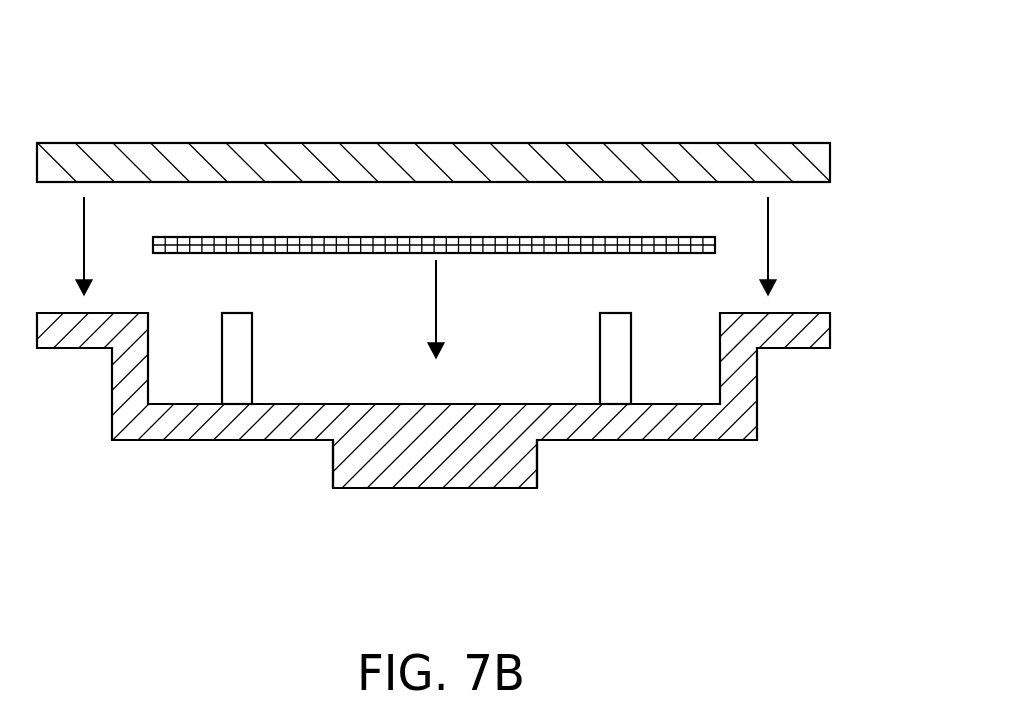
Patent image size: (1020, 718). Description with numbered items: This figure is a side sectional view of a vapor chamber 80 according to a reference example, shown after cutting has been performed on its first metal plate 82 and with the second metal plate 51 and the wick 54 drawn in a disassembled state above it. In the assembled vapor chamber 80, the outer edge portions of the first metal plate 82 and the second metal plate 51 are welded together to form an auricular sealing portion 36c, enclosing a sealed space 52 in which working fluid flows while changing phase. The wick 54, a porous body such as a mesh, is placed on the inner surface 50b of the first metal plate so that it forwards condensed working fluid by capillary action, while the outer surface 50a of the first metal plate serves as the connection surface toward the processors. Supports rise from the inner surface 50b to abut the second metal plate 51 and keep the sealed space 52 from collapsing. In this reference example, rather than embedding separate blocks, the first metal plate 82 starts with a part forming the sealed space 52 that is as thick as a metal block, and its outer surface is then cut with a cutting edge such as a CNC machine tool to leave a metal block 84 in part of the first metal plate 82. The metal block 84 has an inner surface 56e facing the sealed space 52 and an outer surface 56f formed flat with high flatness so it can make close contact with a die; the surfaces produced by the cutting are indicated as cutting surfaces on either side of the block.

The vapor chamber 80 is at (106, 73).
The second metal plate 51 is at (471, 143).
The wick 54 is at (288, 237).
The sealed space 52 is at (479, 330).
The sealing portion 36c is at (494, 389).
The inner surface 50b is at (494, 389).
The outer surface 50a is at (494, 389).
The inner surface 56e is at (494, 389).
The outer surface 56f is at (480, 489).
The first metal plate 82 is at (158, 441).
The metal block 84 is at (403, 489).